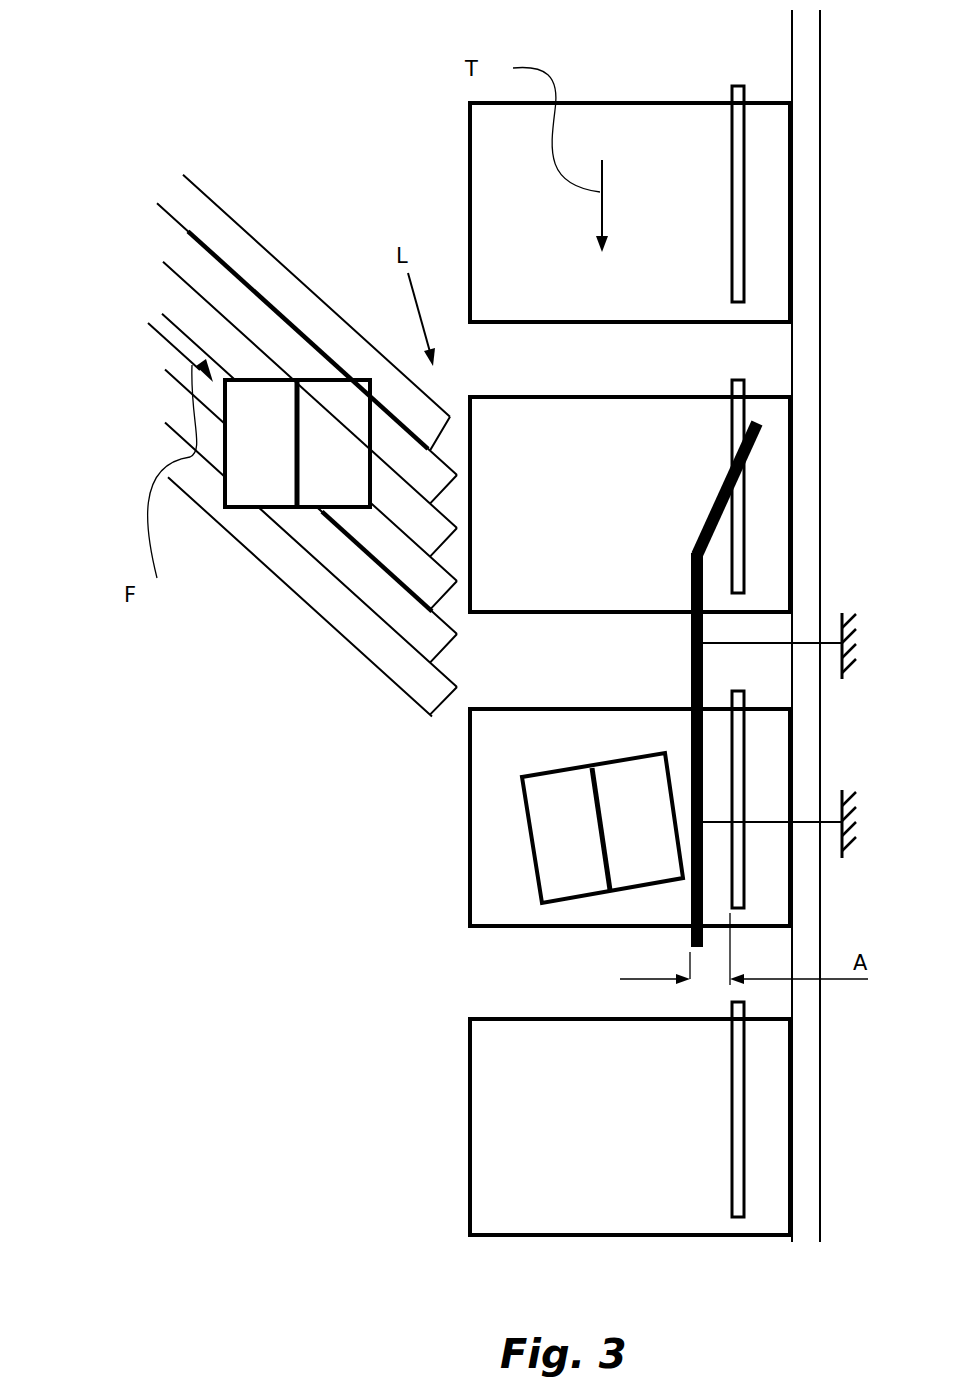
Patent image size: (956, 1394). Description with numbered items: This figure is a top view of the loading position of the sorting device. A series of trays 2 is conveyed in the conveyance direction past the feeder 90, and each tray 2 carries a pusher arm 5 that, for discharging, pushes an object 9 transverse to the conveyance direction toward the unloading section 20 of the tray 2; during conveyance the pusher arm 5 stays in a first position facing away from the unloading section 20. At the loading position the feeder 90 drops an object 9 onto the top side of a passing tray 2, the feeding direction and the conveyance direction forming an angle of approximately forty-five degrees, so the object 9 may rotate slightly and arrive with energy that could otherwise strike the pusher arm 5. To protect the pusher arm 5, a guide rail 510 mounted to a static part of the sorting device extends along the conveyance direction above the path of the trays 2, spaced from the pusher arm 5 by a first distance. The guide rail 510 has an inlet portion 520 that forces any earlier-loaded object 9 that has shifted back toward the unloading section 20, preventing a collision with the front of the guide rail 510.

The tray 2 is at (493, 143).
The unloading section 20 is at (513, 1123).
The pusher arm 5 is at (727, 148).
The object 9 is at (330, 403).
The feeder 90 is at (380, 592).
The guide rail 510 is at (691, 670).
The inlet portion 520 is at (712, 503).